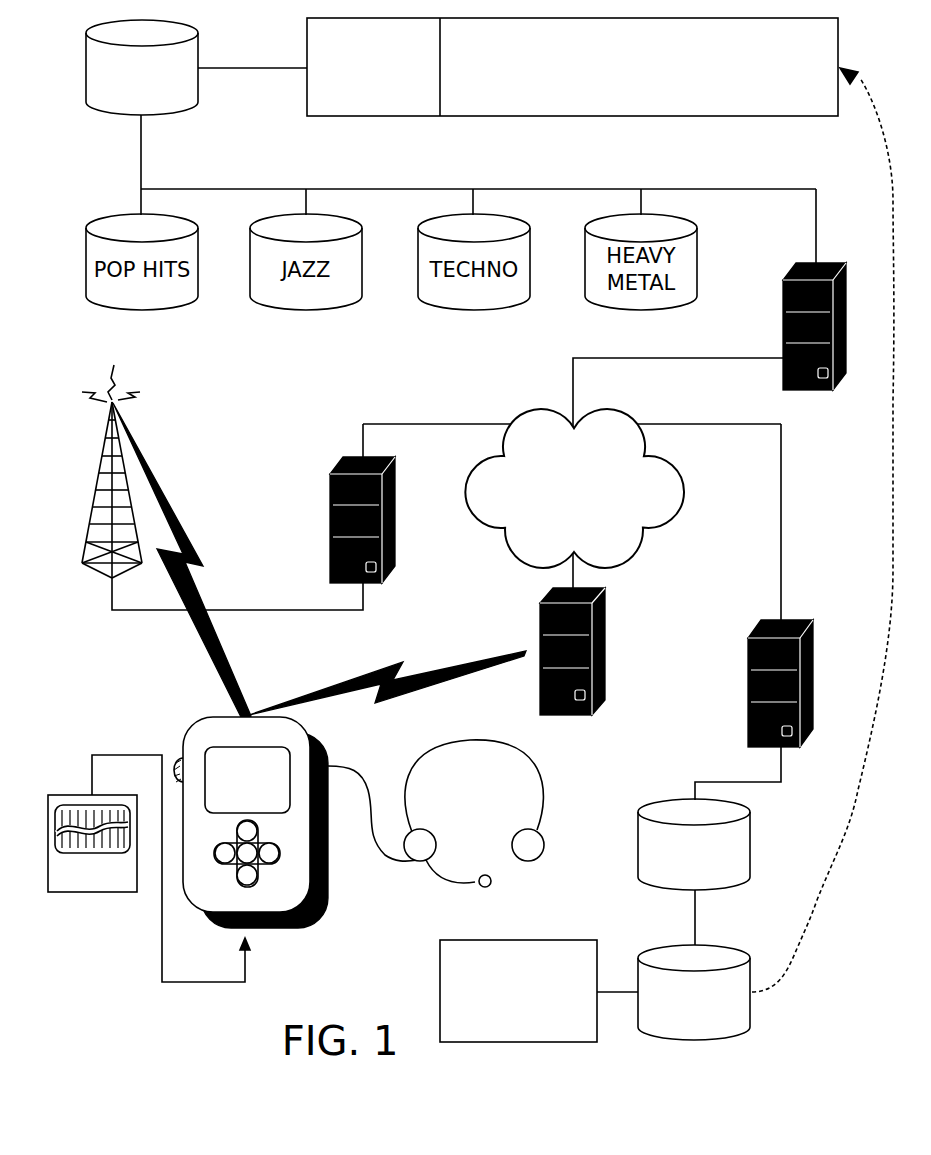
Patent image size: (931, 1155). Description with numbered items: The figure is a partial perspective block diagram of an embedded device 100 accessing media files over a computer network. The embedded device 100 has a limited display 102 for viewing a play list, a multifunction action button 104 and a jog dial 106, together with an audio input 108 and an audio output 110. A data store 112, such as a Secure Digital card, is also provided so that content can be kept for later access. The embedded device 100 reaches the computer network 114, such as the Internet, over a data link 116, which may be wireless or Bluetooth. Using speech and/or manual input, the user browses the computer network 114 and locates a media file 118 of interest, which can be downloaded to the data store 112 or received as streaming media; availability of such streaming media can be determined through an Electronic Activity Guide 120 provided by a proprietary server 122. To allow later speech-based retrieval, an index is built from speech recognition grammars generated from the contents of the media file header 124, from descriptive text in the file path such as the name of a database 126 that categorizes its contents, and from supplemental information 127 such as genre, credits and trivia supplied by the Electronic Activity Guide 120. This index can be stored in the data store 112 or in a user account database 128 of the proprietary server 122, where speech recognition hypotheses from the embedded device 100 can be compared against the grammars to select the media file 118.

The embedded device 100 is at (318, 916).
The limited display 102 is at (225, 747).
The multifunction action button 104 is at (256, 882).
The jog dial 106 is at (177, 762).
The audio input 108 is at (490, 887).
The audio output 110 is at (545, 848).
The data store 112 is at (48, 890).
The computer network 114 is at (637, 553).
The data link 116 is at (248, 716).
The media file 118 is at (506, 128).
The Electronic Activity Guide (EAG) 120 is at (720, 943).
The proprietary server 122 is at (815, 648).
The media file header 124 is at (344, 116).
The database 126 is at (180, 116).
The supplemental information 127 is at (590, 940).
The user account database 128 is at (660, 800).